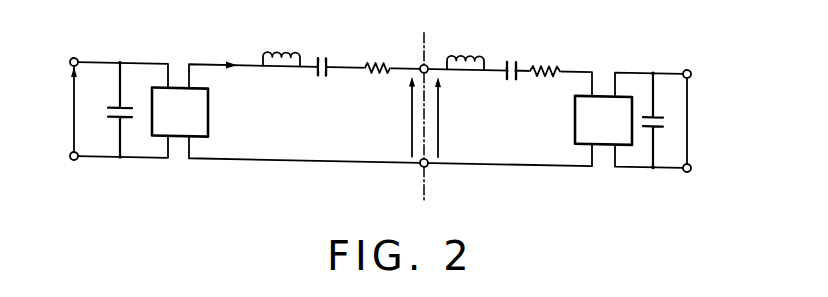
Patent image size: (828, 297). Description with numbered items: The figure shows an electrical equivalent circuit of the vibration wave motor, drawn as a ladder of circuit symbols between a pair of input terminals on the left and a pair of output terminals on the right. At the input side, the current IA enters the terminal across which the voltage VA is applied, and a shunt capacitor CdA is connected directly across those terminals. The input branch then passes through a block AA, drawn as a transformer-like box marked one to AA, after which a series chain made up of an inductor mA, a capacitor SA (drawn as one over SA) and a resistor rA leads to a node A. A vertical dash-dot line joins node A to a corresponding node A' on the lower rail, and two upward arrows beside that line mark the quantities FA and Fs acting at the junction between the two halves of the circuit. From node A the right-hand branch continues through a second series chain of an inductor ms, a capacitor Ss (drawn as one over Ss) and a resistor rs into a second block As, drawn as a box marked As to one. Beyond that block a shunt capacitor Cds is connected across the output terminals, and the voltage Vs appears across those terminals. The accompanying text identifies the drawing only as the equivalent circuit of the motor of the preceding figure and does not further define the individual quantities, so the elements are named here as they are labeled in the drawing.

The input current IA is at (88, 98).
The input voltage VA is at (149, 106).
The input damping capacitance CdA is at (107, 121).
The input force factor transformer 1: AA is at (180, 88).
The input mass inductance mA is at (281, 49).
The input compliance capacitance 1/ SA is at (333, 24).
The input mechanical resistance rA is at (377, 57).
The node A is at (417, 92).
The node A prime A' is at (414, 180).
The force FA is at (400, 116).
The force Fs is at (447, 117).
The output mass inductance ms is at (465, 53).
The output compliance capacitance 1/ Ss is at (518, 23).
The output mechanical resistance rs is at (545, 60).
The output force factor transformer As:1 As is at (603, 97).
The output damping capacitance Cds is at (639, 134).
The output voltage Vs is at (696, 121).